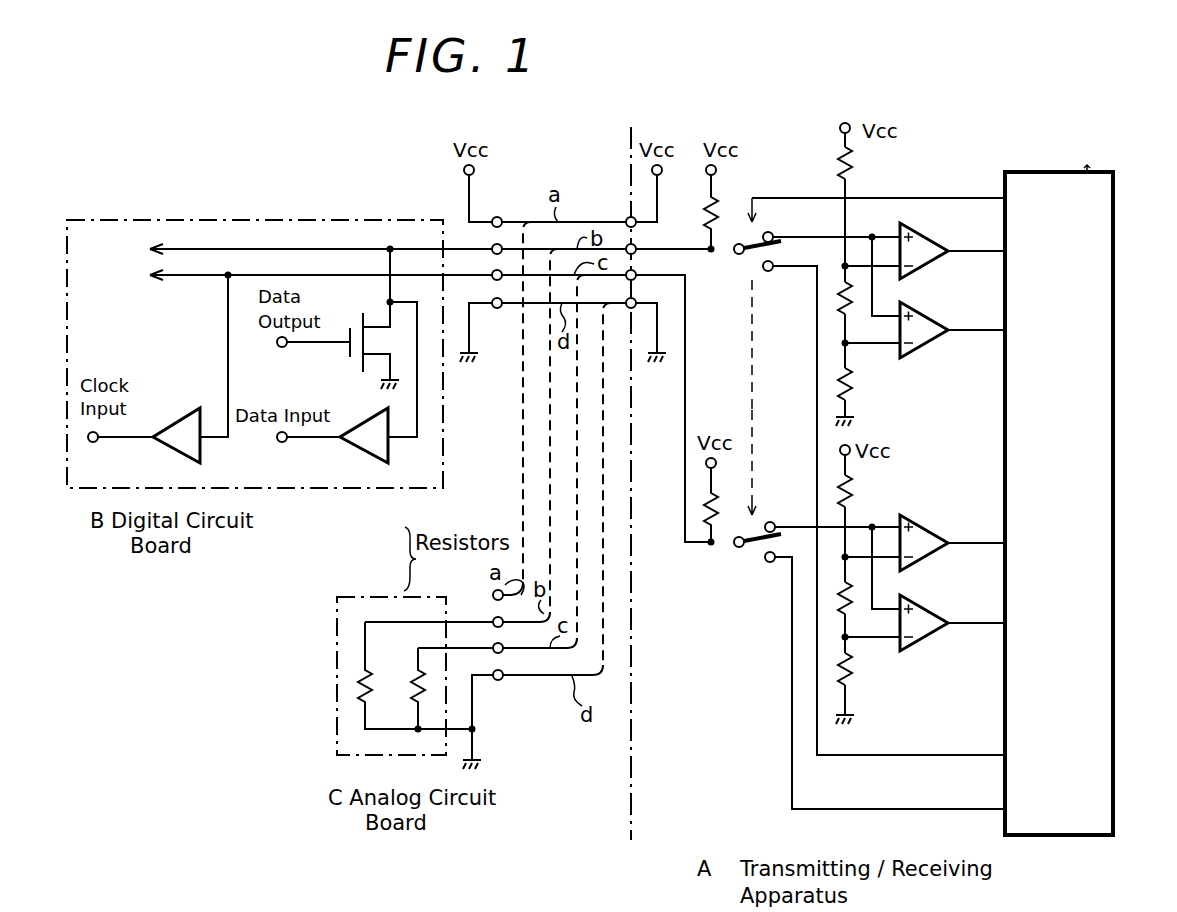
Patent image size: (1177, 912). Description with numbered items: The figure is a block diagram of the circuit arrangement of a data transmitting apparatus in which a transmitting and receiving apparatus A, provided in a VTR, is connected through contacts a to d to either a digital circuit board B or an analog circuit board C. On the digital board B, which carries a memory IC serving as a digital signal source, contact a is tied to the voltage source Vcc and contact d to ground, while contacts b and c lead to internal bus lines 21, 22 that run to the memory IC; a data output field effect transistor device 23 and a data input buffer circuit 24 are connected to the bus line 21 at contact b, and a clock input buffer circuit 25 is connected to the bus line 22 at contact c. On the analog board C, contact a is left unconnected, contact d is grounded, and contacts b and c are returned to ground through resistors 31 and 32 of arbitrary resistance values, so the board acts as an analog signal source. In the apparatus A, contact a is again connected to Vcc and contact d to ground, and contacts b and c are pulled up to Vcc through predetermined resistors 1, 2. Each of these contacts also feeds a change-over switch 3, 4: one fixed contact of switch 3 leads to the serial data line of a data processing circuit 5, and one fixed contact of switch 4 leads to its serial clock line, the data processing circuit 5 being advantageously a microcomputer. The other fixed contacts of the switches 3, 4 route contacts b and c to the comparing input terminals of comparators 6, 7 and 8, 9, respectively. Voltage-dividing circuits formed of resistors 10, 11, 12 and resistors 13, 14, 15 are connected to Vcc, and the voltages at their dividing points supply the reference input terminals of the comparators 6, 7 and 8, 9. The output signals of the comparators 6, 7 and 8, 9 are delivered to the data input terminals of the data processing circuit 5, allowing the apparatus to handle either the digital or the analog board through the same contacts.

The resistor 1 is at (703, 216).
The resistor 2 is at (718, 510).
The change-over switch 3 is at (759, 257).
The change-over switch 4 is at (757, 565).
The data processing circuit 5 is at (1000, 473).
The comparator 6 is at (936, 264).
The comparator 7 is at (928, 348).
The comparator 8 is at (930, 556).
The comparator 9 is at (934, 635).
The resistor 10 is at (853, 164).
The resistor 11 is at (852, 298).
The resistor 12 is at (853, 382).
The resistor 13 is at (853, 486).
The resistor 14 is at (854, 594).
The resistor 15 is at (853, 670).
The bus line 21 is at (192, 252).
The bus line 22 is at (212, 275).
The data output field effect transistor device 23 is at (346, 352).
The data input buffer circuit 24 is at (349, 452).
The clock input buffer circuit 25 is at (172, 452).
The resistor 31 is at (360, 690).
The resistor 32 is at (414, 690).